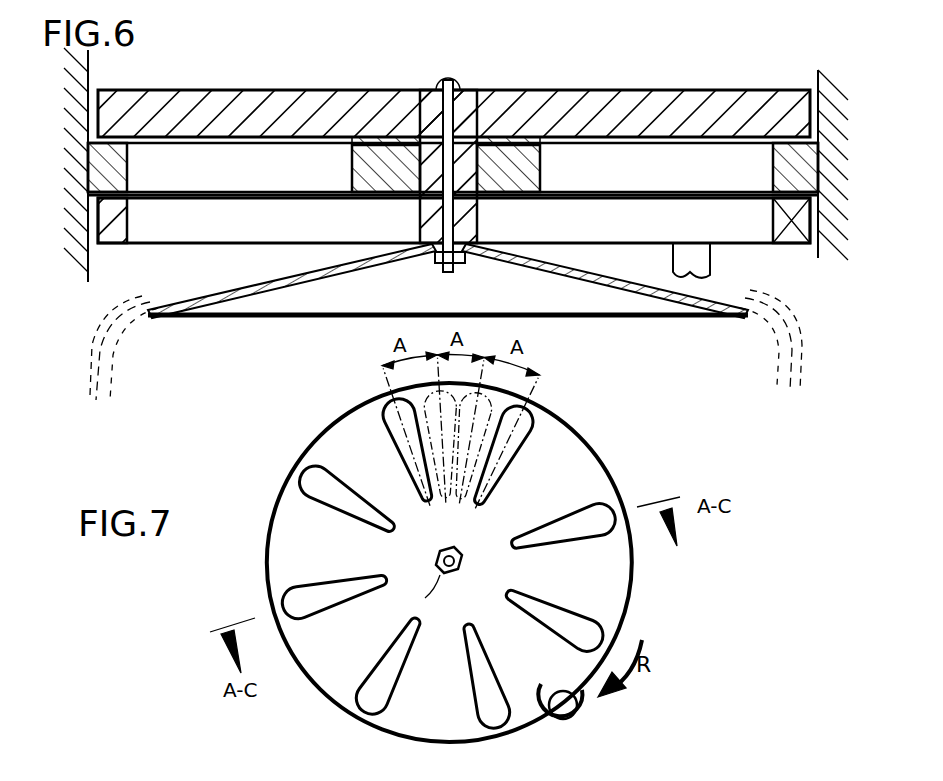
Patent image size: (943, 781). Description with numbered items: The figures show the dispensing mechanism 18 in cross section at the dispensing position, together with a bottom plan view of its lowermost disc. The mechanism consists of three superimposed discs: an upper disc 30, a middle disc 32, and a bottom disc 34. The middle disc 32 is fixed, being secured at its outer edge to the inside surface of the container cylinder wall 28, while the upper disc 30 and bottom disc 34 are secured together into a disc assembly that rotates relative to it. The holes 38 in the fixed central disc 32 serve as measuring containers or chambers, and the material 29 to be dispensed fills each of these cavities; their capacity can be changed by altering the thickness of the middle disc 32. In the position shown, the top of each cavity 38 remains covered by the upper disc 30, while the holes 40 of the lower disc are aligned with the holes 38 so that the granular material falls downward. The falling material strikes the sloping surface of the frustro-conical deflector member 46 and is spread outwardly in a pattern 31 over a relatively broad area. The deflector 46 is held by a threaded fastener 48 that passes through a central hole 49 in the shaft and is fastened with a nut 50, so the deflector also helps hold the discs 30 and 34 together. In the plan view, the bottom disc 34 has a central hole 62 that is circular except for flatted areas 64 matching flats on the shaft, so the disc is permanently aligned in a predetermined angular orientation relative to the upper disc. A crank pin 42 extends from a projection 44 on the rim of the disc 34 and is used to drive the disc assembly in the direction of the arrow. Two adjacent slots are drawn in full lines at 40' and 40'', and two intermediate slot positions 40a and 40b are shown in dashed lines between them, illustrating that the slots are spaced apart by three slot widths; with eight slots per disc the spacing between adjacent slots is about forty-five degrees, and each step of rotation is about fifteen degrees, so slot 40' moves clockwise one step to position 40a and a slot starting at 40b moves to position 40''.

In FIG. 6, the dispensing mechanism 18 is at (842, 115).
In FIG. 6, the container cylinder wall 28 is at (88, 75).
In FIG. 6, the material to be dispensed 29 is at (258, 70).
In FIG. 6, the upper disc 30 is at (112, 114).
In FIG. 6, the distribution pattern 31 is at (115, 365).
In FIG. 6, the middle disc 32 is at (100, 170).
In FIG. 6, the bottom disc 34 is at (112, 224).
In FIG. 7, the bottom disc 34 is at (562, 408).
In FIG. 6, the holes in the fixed central disc 38 is at (190, 162).
In FIG. 6, the holes of the lower disc 40 is at (474, 264).
In FIG. 7, the holes of the lower disc 40 is at (439, 611).
In FIG. 7, the slot 40' is at (345, 449).
In FIG. 7, the slot 40'' is at (575, 455).
In FIG. 7, the slot position 40a is at (385, 382).
In FIG. 7, the slot position 40b is at (543, 386).
In FIG. 6, the crank pin 42 is at (712, 256).
In FIG. 7, the crank pin 42 is at (566, 708).
In FIG. 7, the projection 44 is at (584, 720).
In FIG. 6, the deflector member 46 is at (358, 262).
In FIG. 6, the threaded fastener 48 is at (438, 82).
In FIG. 7, the central hole 49 is at (460, 548).
In FIG. 6, the nut 50 is at (466, 258).
In FIG. 7, the central hole 62 is at (425, 598).
In FIG. 7, the flatted areas 64 is at (436, 558).